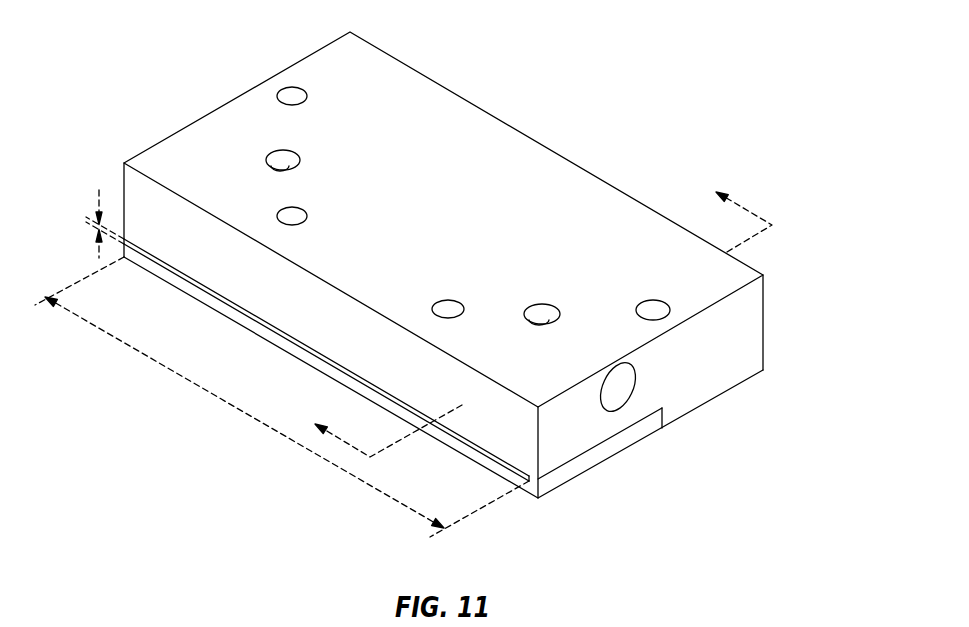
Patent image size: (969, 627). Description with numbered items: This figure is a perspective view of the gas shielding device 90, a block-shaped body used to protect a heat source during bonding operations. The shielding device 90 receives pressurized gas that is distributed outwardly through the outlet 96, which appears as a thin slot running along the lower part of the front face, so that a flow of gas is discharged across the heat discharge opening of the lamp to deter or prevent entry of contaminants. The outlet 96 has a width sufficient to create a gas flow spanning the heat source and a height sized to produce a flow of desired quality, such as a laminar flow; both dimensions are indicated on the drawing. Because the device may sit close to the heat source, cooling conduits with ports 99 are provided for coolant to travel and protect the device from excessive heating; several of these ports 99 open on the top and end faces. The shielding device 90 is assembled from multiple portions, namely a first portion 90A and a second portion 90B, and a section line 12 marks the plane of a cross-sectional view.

The gas shielding device 90 is at (760, 38).
The first portion 90A is at (713, 399).
The second portion 90B is at (603, 462).
The outlet 96 is at (283, 334).
The ports 99 is at (302, 158).
The section line 12 is at (531, 315).